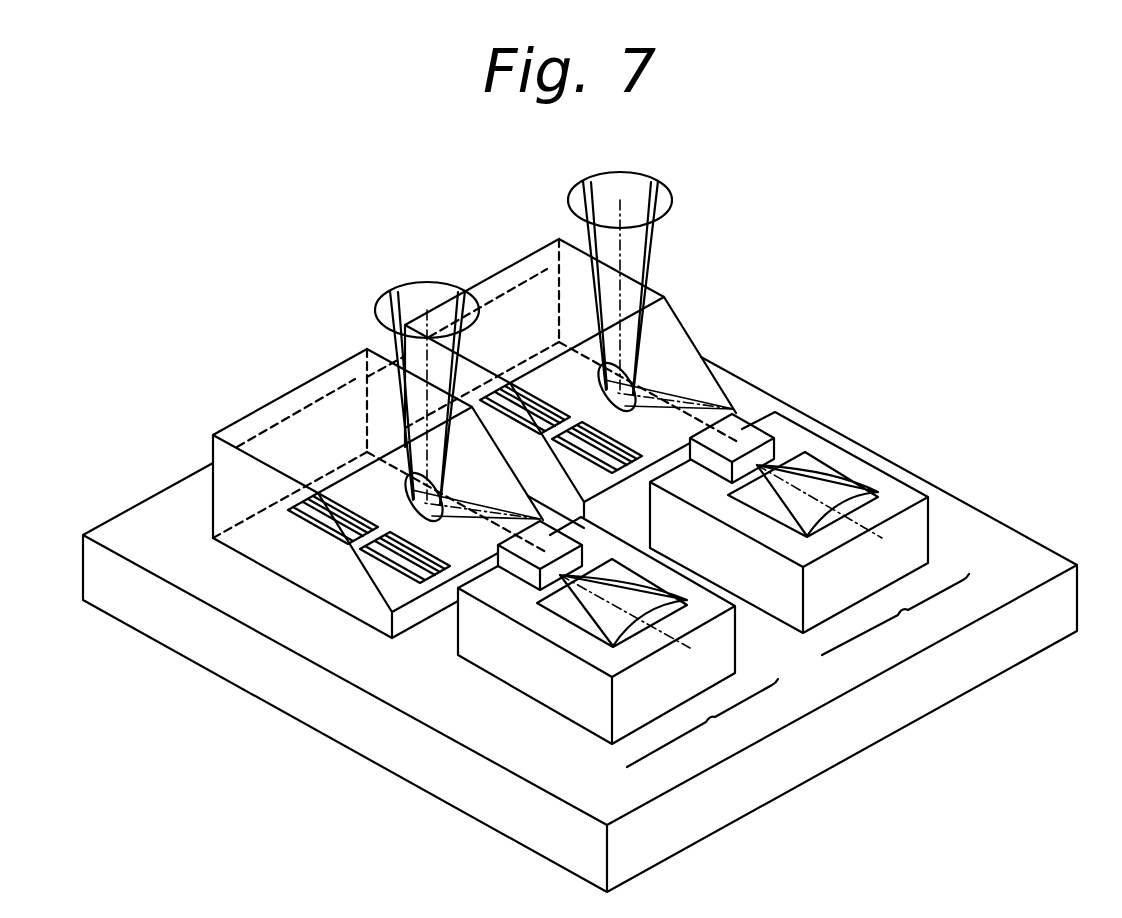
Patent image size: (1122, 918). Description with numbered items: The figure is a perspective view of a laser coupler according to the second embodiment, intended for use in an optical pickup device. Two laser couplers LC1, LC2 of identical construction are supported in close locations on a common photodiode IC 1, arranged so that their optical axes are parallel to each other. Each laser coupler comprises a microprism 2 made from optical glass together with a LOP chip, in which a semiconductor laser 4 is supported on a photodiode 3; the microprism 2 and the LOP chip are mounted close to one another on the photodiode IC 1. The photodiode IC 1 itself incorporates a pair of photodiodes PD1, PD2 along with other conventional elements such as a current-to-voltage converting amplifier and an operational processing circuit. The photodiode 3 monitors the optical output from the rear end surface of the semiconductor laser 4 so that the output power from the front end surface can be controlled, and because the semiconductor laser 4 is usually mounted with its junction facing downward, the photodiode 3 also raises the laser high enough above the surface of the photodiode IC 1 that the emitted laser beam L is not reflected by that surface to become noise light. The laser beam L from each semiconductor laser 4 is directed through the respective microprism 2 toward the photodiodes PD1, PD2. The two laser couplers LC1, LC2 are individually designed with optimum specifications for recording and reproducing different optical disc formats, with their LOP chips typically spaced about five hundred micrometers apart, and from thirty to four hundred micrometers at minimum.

The photodiode IC 1 is at (365, 735).
The microprism 2 is at (260, 422).
The photodiode 3 is at (605, 655).
The semiconductor laser 4 is at (530, 553).
The photodiode PD1 is at (405, 554).
The photodiode PD2 is at (332, 514).
The laser beam L is at (455, 593).
The laser coupler LC1 is at (708, 727).
The laser coupler LC2 is at (905, 620).